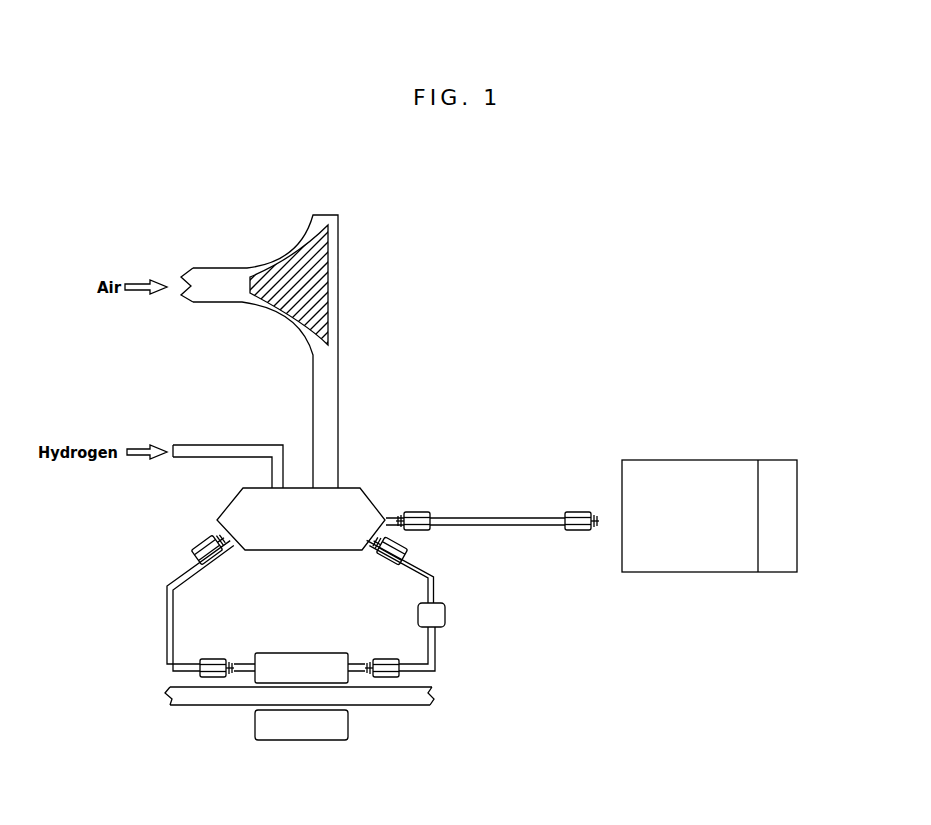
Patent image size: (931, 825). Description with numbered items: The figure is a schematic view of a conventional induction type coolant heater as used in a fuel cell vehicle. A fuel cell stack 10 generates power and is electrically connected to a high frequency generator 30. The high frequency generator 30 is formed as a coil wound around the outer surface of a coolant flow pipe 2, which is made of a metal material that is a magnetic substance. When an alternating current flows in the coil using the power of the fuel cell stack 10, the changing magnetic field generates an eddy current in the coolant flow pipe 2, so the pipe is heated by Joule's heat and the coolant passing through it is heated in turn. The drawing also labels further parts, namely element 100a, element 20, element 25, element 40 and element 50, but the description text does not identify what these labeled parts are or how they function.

The air intake duct 100a is at (333, 286).
The fuel cell stack 10 is at (373, 468).
The battery 20 is at (688, 456).
The battery module 25 is at (782, 461).
The high frequency generator 30 is at (315, 652).
The valve 40 is at (446, 613).
The coolant loop 50 is at (152, 550).
The coolant flow pipe 2 is at (437, 693).